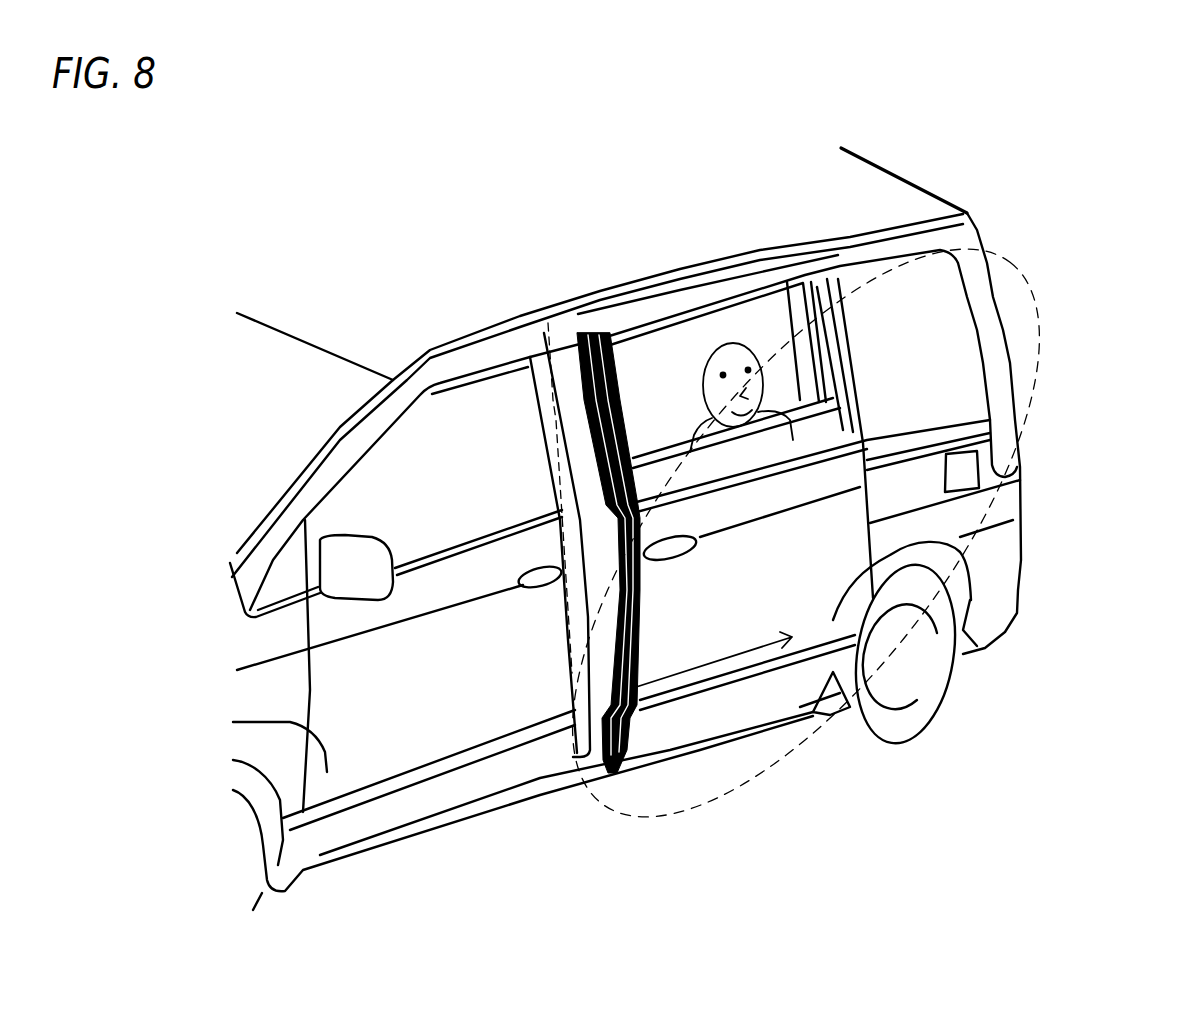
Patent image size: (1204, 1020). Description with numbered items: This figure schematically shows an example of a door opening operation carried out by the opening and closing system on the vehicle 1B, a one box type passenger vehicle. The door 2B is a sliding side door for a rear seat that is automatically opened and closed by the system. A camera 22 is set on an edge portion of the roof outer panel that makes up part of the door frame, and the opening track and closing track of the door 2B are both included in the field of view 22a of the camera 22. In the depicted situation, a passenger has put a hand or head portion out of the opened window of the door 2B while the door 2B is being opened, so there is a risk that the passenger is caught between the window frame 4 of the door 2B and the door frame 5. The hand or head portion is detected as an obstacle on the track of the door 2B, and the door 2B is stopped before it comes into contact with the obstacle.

The vehicle 1B is at (877, 155).
The door 2B is at (731, 712).
The window frame 4 is at (614, 362).
The door frame 5 is at (737, 333).
The camera 22 is at (547, 313).
The field of view 22a is at (1042, 360).